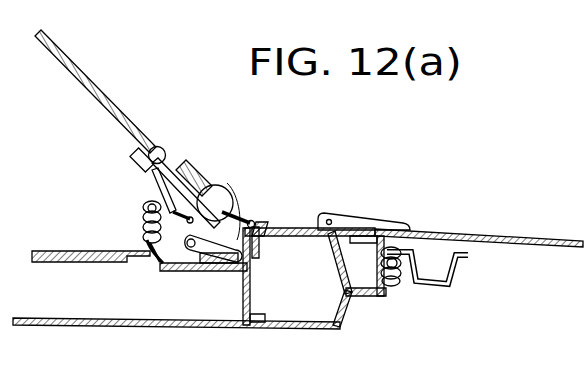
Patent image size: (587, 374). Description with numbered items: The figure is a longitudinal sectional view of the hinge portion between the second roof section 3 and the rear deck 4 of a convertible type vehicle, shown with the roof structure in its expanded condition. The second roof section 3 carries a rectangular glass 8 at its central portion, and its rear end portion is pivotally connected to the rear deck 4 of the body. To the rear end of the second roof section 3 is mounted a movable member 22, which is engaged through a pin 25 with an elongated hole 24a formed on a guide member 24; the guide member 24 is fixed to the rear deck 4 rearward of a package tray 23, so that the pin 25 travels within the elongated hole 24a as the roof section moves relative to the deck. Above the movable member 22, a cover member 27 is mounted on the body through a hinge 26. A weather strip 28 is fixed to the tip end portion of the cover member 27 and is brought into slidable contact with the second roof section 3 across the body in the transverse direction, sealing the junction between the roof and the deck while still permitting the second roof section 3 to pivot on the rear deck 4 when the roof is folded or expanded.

The rectangle glass 8 is at (97, 89).
The second roof section 3 is at (168, 165).
The weather strip 28 is at (194, 181).
The cover member 27 is at (225, 186).
The guide member 24 is at (245, 220).
The hinge 26 is at (254, 221).
The movable member 22 is at (146, 210).
The package tray 23 is at (80, 251).
The pin 25 is at (175, 255).
The rear deck 4 is at (197, 265).
The elongated hole 24a is at (217, 273).